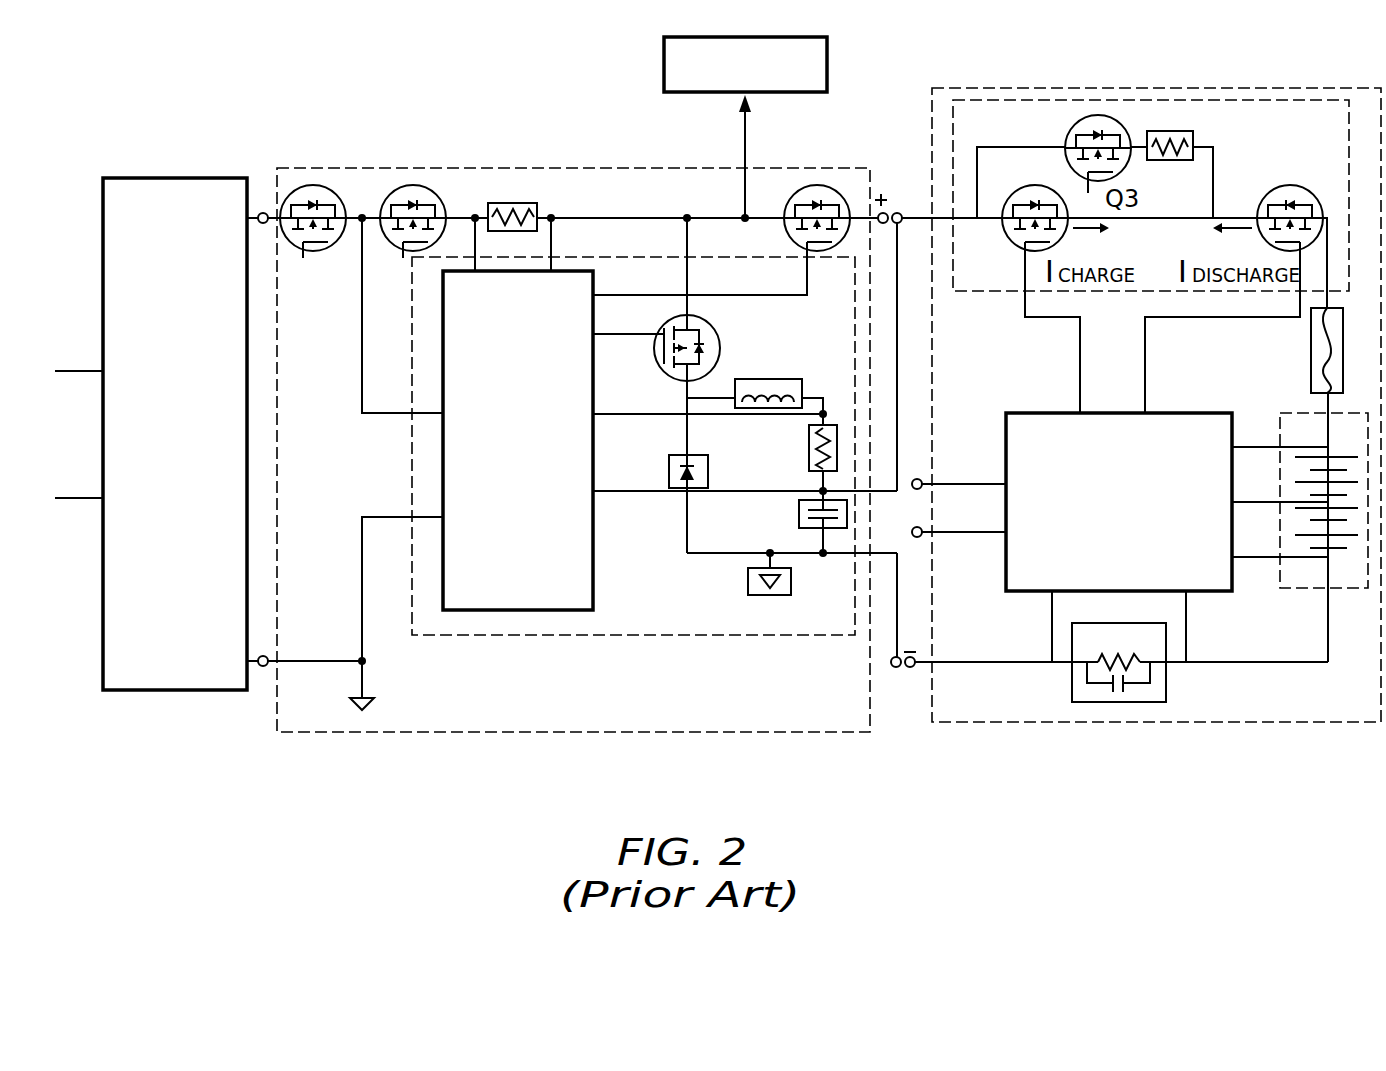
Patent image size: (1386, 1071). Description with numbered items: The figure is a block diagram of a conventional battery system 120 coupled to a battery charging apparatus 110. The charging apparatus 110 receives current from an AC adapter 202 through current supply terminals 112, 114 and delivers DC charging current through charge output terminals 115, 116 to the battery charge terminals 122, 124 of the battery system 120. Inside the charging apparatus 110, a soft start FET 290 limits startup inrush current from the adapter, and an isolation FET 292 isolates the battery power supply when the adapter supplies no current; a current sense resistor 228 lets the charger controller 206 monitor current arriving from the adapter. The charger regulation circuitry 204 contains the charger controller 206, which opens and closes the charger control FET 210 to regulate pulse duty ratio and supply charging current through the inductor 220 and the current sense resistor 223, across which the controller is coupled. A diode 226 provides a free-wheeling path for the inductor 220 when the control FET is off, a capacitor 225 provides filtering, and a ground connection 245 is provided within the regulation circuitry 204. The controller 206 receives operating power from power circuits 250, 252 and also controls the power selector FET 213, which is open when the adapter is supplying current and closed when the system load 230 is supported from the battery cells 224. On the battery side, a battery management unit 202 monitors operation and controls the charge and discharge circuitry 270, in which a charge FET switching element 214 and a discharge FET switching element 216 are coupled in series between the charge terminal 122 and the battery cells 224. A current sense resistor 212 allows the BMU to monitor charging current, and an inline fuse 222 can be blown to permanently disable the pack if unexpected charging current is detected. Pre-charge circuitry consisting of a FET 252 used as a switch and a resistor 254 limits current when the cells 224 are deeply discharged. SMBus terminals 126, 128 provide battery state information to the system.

The battery charging apparatus 110 is at (363, 732).
The current supply terminal 112 is at (263, 212).
The current supply terminal 114 is at (259, 666).
The charge output terminal 115 is at (882, 207).
The charge output terminal 116 is at (894, 668).
The battery system 120 is at (1270, 722).
The battery charge terminal 122 is at (897, 210).
The battery charge terminal 124 is at (912, 668).
The SMBus terminal 126 is at (922, 480).
The SMBus terminal 128 is at (922, 537).
The battery management unit 202 is at (190, 690).
The charger regulation circuitry 204 is at (565, 636).
The charger controller 206 is at (593, 594).
The charger control FET 210 is at (712, 326).
The current sense resistor 212 is at (1166, 682).
The power selector FET 213 is at (815, 185).
The charge FET switching element 214 is at (1005, 238).
The discharge FET switching element 216 is at (1262, 190).
The inductor 220 is at (800, 378).
The inline fuse 222 is at (1311, 372).
The current sense resistor 223 is at (809, 445).
The battery cells 224 is at (1305, 590).
The capacitor 225 is at (799, 510).
The diode 226 is at (672, 455).
The current sense resistor 228 is at (540, 203).
The system load 230 is at (827, 68).
The ground connection 245 is at (775, 595).
The power circuit 250 is at (362, 400).
The pre-charge FET 252 is at (362, 530).
The pre-charge resistor 254 is at (1168, 160).
The charge and discharge circuitry 270 is at (1000, 291).
The soft start FET 290 is at (320, 251).
The isolation FET 292 is at (400, 251).